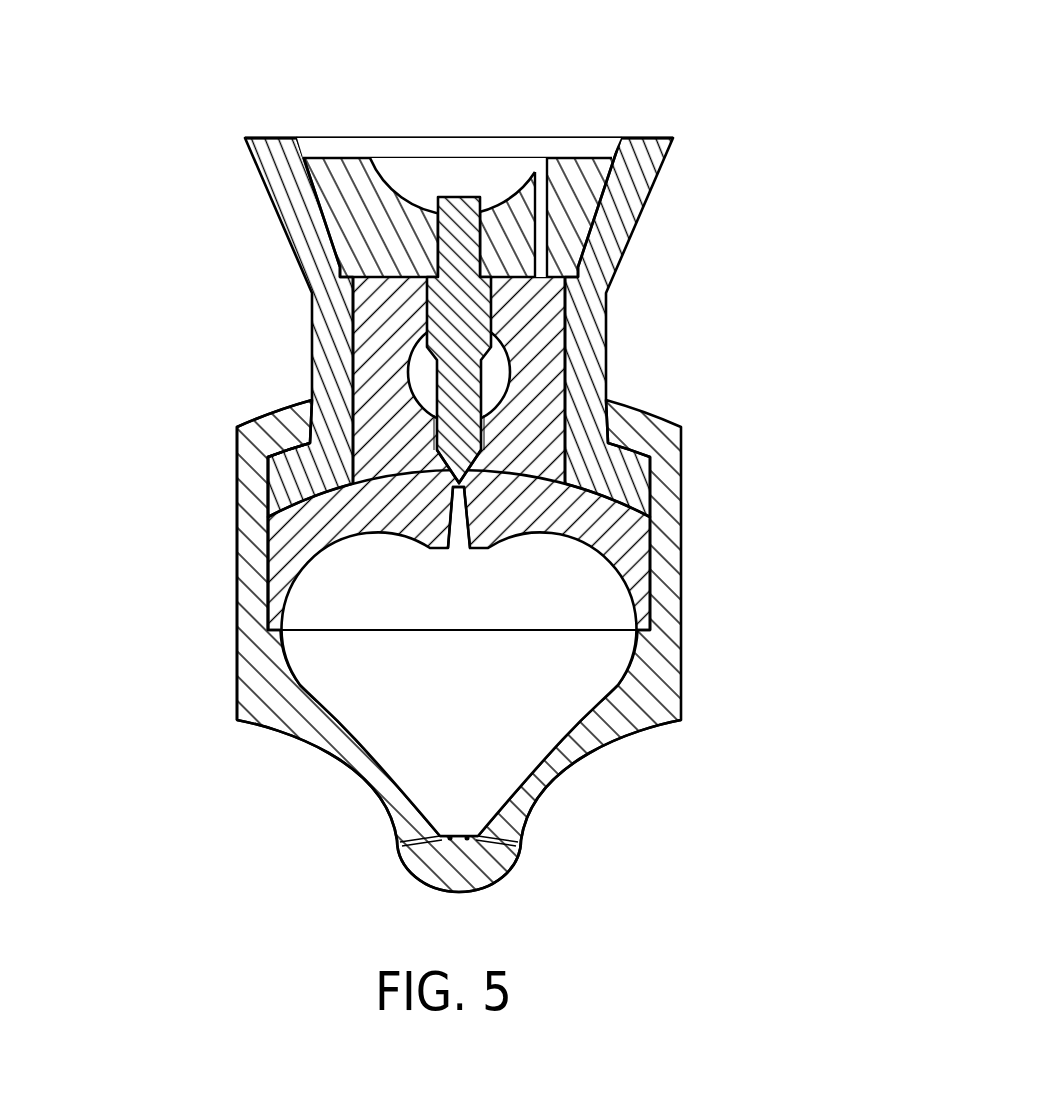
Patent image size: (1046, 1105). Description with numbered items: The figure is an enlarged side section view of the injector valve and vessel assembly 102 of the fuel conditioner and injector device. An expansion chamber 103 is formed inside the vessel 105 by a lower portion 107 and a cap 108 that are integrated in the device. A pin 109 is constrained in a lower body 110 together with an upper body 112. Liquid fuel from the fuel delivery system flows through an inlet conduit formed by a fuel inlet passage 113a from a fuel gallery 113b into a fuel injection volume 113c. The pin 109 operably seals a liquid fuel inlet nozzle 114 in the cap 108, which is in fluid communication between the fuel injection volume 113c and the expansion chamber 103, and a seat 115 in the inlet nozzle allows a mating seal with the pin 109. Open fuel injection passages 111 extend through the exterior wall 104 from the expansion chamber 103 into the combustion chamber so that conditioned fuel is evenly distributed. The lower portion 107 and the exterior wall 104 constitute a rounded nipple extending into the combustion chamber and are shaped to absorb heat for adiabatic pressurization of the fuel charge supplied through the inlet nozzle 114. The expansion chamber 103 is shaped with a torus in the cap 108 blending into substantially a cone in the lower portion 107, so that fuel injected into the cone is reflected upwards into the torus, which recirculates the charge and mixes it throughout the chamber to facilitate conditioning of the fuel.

The nozzle assembly 102 is at (290, 115).
The expansion chamber 103 is at (462, 720).
The exterior wall 104 is at (557, 777).
The vessel 105 is at (245, 600).
The lower portion 107 is at (647, 692).
The cap 108 is at (620, 537).
The pin 109 is at (467, 311).
The lower body 110 is at (375, 390).
The open fuel injection passages 111 is at (407, 843).
The upper body 112 is at (352, 223).
The fuel inlet passage 113a is at (543, 208).
The fuel gallery 113b is at (497, 177).
The fuel injection volume 113c is at (488, 377).
The liquid fuel inlet nozzle 114 is at (458, 533).
The seat 115 is at (478, 462).